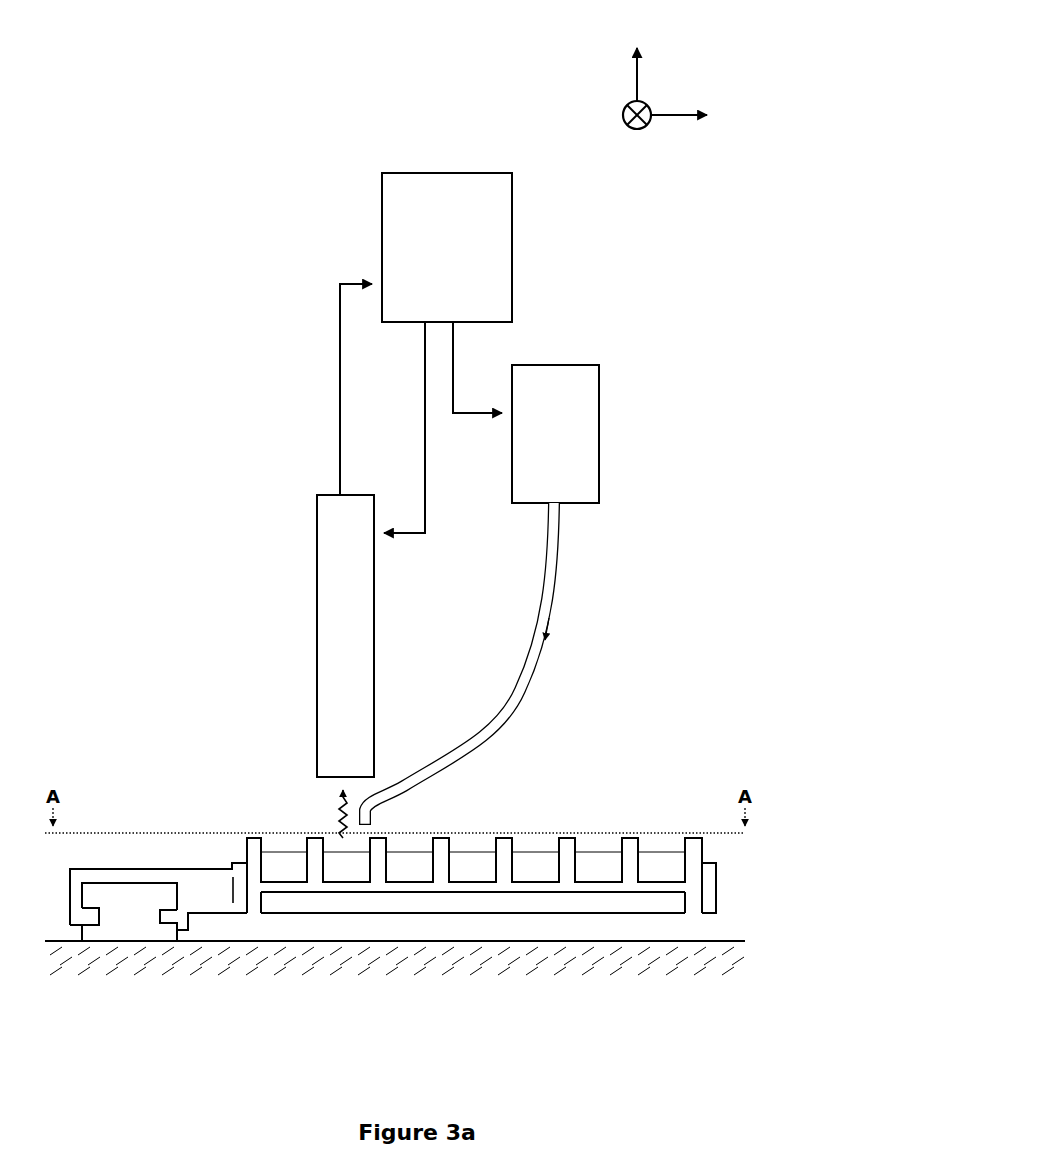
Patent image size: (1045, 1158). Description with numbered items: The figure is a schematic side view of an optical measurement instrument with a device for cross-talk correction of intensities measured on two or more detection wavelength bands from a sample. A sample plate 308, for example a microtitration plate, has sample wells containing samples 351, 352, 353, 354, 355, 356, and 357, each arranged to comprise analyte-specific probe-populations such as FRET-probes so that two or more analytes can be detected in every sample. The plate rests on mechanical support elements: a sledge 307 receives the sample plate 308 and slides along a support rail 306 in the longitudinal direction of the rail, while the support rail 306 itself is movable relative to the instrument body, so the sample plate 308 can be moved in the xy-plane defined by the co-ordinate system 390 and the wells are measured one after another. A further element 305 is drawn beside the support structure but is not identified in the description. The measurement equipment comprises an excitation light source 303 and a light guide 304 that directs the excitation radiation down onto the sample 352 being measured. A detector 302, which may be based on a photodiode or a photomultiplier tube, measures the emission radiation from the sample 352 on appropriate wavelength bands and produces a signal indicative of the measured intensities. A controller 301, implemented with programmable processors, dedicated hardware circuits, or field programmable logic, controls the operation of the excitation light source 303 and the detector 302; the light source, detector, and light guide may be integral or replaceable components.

The controller 301 is at (447, 247).
The detector 302 is at (345, 666).
The excitation light source 303 is at (555, 434).
The light guide 304 is at (542, 553).
The stage 305 is at (160, 868).
The support rail 306 is at (129, 905).
The sledge 307 is at (718, 888).
The sample plate 308 is at (704, 848).
The sample 351 is at (296, 866).
The sample 352 is at (351, 868).
The sample 353 is at (415, 870).
The sample 354 is at (480, 868).
The sample 355 is at (543, 866).
The sample 356 is at (605, 868).
The sample 357 is at (668, 866).
The co-ordinate system 390 is at (676, 55).